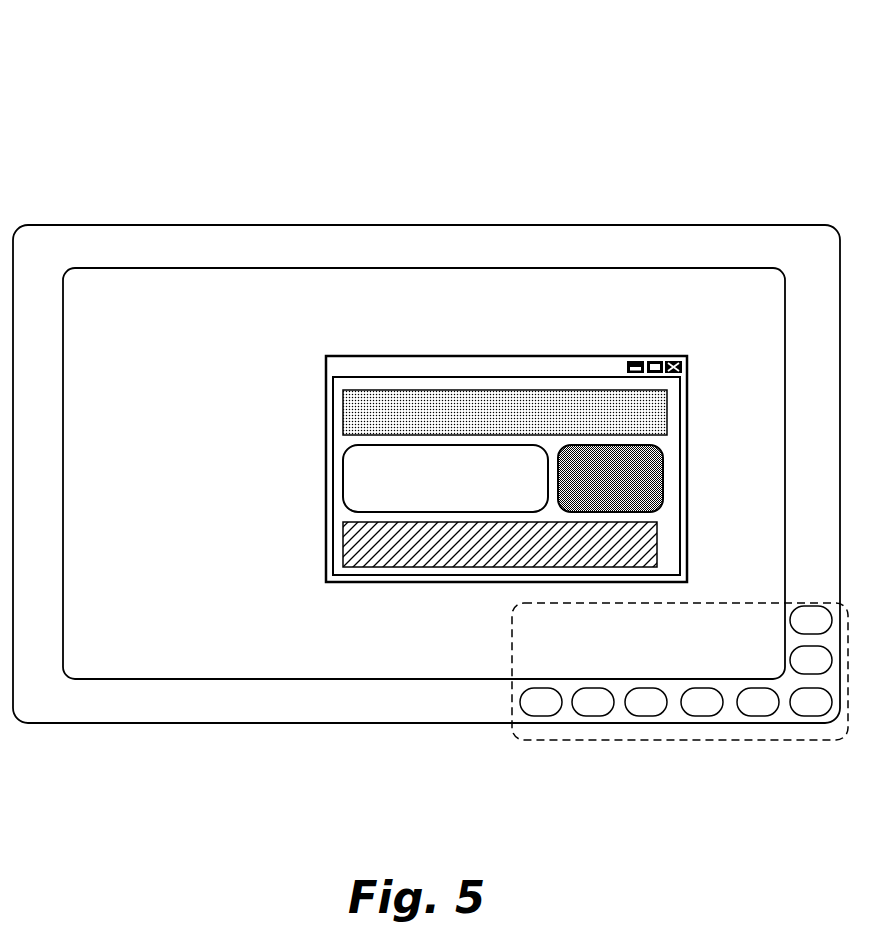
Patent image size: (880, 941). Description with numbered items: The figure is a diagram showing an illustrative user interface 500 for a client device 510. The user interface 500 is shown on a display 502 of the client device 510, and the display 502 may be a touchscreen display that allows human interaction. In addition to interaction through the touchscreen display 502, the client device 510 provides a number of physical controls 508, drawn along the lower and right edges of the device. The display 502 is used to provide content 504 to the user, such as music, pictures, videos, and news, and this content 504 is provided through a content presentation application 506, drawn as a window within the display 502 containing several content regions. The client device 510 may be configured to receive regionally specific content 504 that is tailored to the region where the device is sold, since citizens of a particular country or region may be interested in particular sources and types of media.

The user interface 500 is at (178, 135).
The display 502 is at (302, 290).
The content 504 is at (343, 482).
The content presentation application 506 is at (588, 325).
The physical controls 508 is at (733, 737).
The client device 510 is at (752, 225).